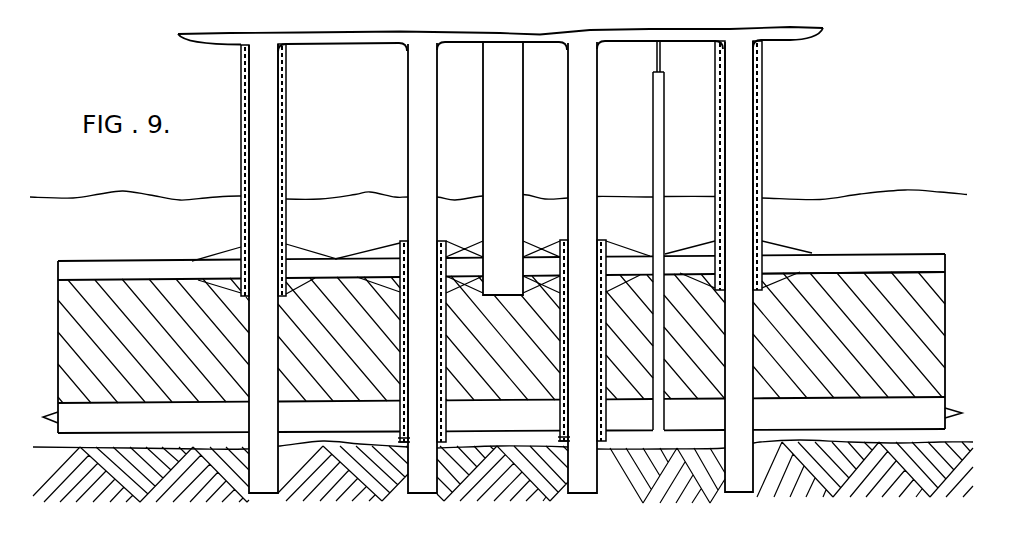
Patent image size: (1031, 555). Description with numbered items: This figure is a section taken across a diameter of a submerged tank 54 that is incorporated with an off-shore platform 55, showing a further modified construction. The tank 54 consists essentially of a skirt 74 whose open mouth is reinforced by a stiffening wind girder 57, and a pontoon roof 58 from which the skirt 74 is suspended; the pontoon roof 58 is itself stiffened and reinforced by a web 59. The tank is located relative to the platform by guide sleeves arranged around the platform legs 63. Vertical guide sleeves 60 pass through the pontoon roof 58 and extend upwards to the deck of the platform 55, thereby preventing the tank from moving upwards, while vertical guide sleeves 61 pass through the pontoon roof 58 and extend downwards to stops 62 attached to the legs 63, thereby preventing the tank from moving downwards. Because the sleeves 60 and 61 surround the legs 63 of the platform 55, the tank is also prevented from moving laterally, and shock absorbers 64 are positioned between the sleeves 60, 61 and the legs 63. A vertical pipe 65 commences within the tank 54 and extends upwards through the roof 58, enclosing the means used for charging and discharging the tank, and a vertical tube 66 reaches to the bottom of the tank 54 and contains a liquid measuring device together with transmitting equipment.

The submerged tank 54 is at (880, 288).
The off-shore platform 55 is at (792, 42).
The stiffening wind girder 57 is at (43, 417).
The pontoon roof 58 is at (833, 263).
The web 59 is at (790, 252).
The vertical guide sleeves 60 is at (287, 146).
The vertical guide sleeves 61 is at (400, 243).
The stops 62 is at (403, 445).
The legs 63 is at (272, 177).
The shock absorbers 64 is at (242, 162).
The vertical pipe 65 is at (495, 135).
The vertical tube 66 is at (657, 128).
The skirt 74 is at (947, 355).